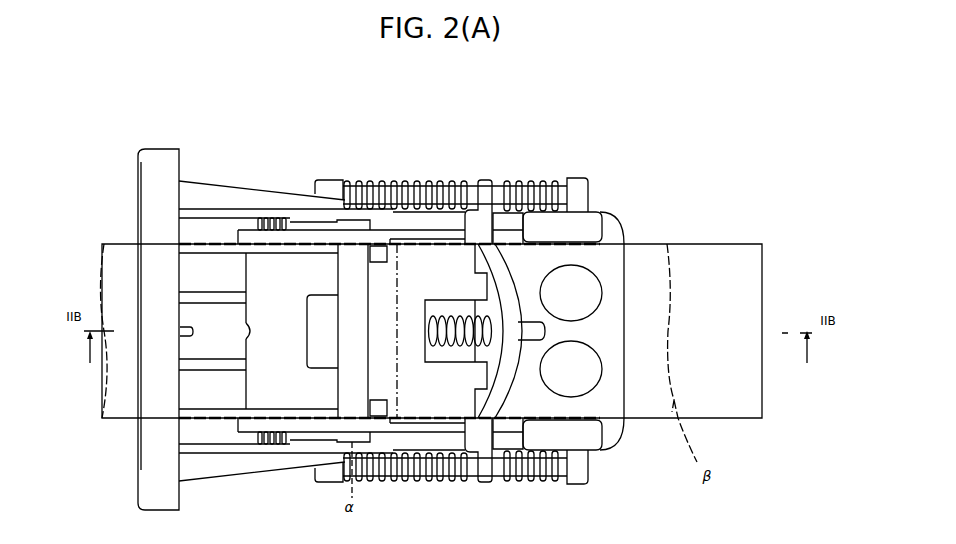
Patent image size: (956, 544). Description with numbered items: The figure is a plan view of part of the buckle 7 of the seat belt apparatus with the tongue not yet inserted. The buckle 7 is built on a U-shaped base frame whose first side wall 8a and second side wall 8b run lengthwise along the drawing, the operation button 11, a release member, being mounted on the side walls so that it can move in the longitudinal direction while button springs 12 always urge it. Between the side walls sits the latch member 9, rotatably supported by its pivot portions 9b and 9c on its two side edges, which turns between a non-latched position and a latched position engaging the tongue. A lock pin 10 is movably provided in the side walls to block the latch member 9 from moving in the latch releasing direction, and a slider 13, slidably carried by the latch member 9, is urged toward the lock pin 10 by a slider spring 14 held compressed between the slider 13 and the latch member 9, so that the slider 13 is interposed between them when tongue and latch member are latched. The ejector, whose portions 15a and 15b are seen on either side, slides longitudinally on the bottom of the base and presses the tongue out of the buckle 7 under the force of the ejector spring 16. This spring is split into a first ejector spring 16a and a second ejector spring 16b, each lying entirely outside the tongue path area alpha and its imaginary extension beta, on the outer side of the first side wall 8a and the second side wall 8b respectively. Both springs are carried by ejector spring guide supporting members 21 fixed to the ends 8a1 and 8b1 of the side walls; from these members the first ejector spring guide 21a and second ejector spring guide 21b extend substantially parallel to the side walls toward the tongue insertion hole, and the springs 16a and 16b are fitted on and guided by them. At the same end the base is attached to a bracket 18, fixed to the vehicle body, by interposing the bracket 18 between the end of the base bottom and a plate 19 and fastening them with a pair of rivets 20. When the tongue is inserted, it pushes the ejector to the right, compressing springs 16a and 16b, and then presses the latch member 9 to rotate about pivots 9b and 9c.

The buckle 7 is at (290, 135).
The first side wall 8a is at (300, 427).
The end of the first side wall 8a1 is at (510, 432).
The second side wall 8b is at (302, 232).
The end of the second side wall 8b1 is at (508, 232).
The latch member 9 is at (313, 350).
The pivot portion 9b is at (479, 455).
The pivot portion 9c is at (482, 220).
The lock pin 10 is at (350, 273).
The operation button 11 is at (150, 220).
The button springs 12 is at (282, 220).
The slider 13 is at (447, 282).
The slider spring 14 is at (485, 313).
The ejector portion 15a is at (325, 478).
The ejector portion 15b is at (337, 182).
The ejector spring 16 is at (428, 170).
The first ejector spring 16a is at (500, 482).
The second ejector spring 16b is at (459, 182).
The bracket 18 is at (740, 258).
The plate 19 is at (610, 338).
The rivets 20 is at (562, 302).
The ejector spring guide supporting members 21 is at (585, 217).
The first ejector spring guide 21a is at (395, 472).
The second ejector spring guide 21b is at (393, 208).